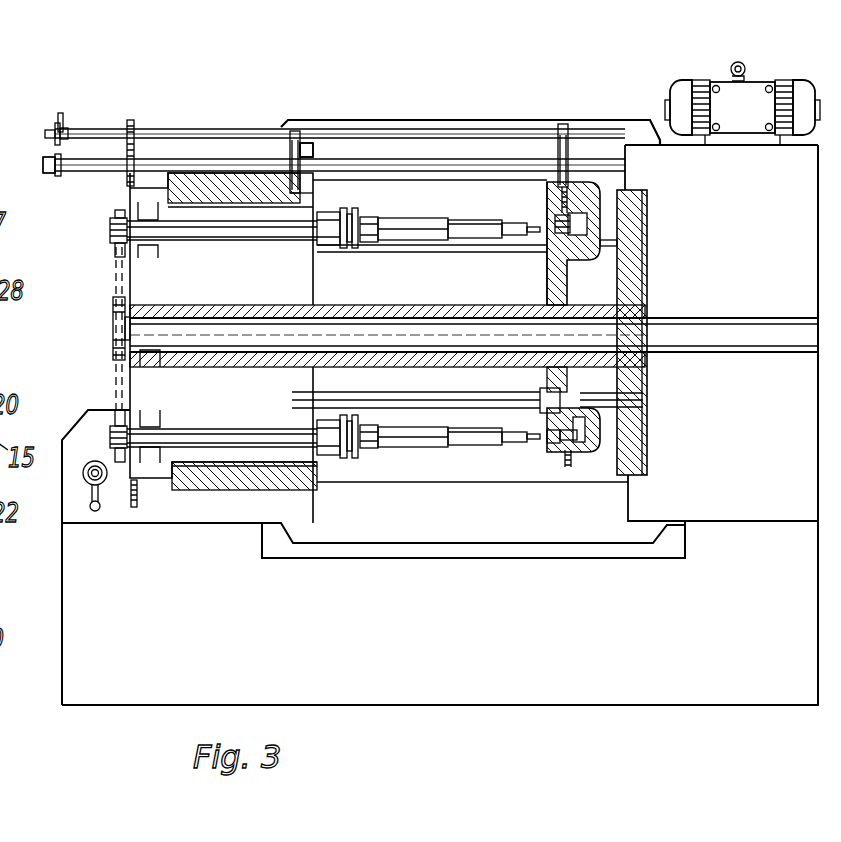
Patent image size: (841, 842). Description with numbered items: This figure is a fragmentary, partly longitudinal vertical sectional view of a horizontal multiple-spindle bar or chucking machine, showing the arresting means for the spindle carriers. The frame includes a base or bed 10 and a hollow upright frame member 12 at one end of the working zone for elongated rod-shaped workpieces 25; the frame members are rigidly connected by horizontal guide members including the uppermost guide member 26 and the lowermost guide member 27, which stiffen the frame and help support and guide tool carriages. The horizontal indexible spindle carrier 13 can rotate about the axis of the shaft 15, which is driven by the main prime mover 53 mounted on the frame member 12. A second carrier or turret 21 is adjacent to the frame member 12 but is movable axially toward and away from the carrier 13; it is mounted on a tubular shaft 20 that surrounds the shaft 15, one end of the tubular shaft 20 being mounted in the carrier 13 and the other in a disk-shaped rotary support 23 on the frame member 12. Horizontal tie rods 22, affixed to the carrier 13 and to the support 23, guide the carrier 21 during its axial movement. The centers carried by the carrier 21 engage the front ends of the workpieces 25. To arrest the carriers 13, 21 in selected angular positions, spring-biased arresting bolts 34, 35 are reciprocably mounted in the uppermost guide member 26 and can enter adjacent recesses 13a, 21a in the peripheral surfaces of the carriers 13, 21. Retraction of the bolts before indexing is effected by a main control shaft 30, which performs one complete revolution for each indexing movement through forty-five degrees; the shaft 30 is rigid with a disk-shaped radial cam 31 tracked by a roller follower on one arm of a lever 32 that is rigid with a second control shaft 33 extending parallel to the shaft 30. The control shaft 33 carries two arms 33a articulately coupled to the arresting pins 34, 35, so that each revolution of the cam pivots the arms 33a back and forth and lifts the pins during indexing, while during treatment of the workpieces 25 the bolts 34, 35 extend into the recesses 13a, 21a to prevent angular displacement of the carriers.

The base or bed 10 is at (68, 659).
The frame member 12 is at (670, 153).
The spindle carrier 13 is at (150, 287).
The recess 13a is at (280, 215).
The shaft 15 is at (188, 338).
The tubular shaft 20 is at (398, 310).
The second carrier or turret 21 is at (583, 190).
The recess 21a is at (545, 245).
The tie rods 22 is at (477, 246).
The disk-shaped rotary support 23 is at (638, 460).
The workpieces 25 is at (407, 227).
The uppermost guide member 26 is at (453, 127).
The lowermost guide member 27 is at (498, 530).
The main control shaft 30 is at (388, 137).
The disk-shaped radial cam 31 is at (61, 122).
The lever 32 is at (48, 160).
The second control shaft 33 is at (368, 166).
The arms 33a is at (300, 160).
The arresting bolt 34 is at (277, 185).
The arresting bolt 35 is at (547, 185).
The main prime mover 53 is at (750, 98).